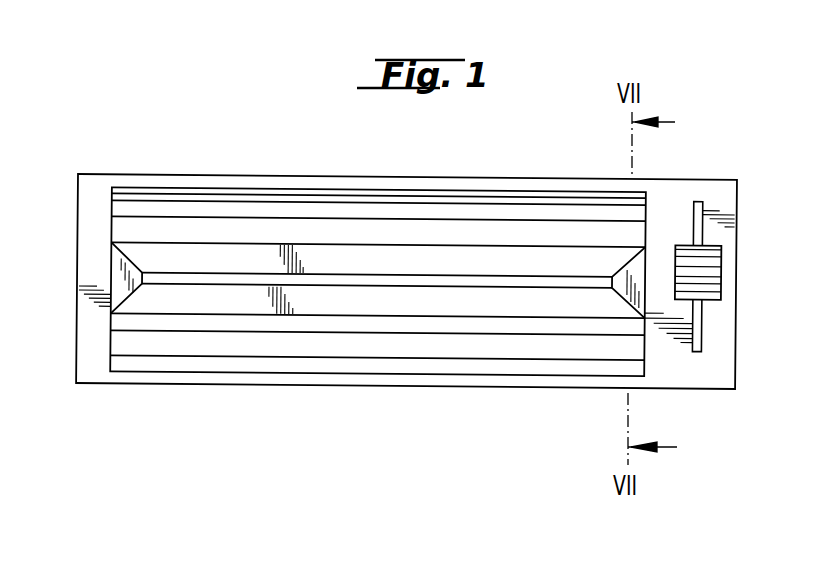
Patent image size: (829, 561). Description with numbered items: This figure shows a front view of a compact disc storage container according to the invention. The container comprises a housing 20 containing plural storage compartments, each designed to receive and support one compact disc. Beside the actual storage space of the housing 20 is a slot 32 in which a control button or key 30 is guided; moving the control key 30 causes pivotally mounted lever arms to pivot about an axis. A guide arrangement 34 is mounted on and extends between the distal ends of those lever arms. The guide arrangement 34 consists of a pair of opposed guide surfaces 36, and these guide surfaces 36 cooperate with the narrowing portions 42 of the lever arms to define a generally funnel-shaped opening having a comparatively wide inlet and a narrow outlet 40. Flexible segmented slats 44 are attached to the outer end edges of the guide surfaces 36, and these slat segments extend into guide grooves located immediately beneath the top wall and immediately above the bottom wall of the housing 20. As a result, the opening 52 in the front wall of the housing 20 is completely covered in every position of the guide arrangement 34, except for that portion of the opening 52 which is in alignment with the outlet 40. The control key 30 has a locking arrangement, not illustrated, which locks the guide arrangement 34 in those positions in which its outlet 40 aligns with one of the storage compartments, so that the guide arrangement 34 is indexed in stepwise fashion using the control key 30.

The housing 20 is at (195, 172).
The control key 30 is at (683, 255).
The slot 32 is at (706, 205).
The guide arrangement 34 is at (490, 218).
The guide surfaces 36 is at (543, 252).
The outlet 40 is at (412, 280).
The narrowing portions 42 is at (118, 260).
The segmented slats 44 is at (297, 210).
The opening 52 is at (612, 193).